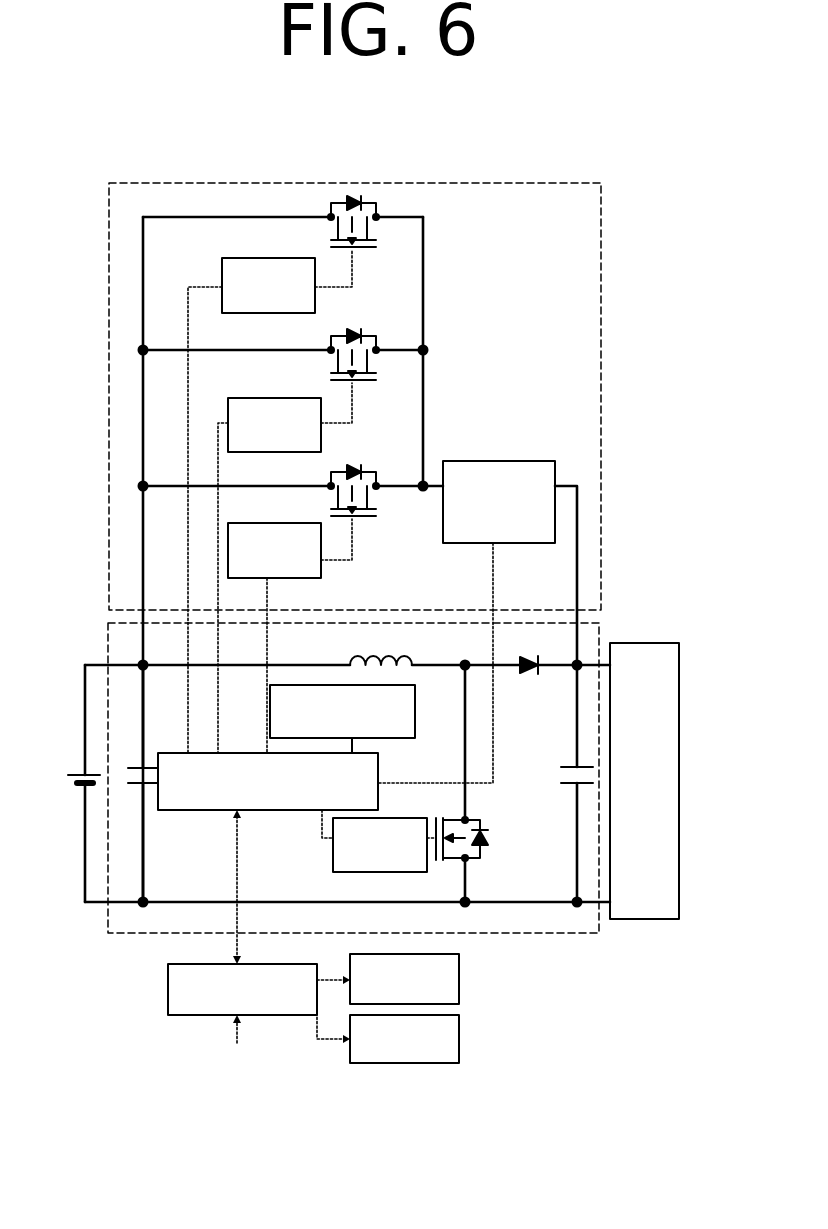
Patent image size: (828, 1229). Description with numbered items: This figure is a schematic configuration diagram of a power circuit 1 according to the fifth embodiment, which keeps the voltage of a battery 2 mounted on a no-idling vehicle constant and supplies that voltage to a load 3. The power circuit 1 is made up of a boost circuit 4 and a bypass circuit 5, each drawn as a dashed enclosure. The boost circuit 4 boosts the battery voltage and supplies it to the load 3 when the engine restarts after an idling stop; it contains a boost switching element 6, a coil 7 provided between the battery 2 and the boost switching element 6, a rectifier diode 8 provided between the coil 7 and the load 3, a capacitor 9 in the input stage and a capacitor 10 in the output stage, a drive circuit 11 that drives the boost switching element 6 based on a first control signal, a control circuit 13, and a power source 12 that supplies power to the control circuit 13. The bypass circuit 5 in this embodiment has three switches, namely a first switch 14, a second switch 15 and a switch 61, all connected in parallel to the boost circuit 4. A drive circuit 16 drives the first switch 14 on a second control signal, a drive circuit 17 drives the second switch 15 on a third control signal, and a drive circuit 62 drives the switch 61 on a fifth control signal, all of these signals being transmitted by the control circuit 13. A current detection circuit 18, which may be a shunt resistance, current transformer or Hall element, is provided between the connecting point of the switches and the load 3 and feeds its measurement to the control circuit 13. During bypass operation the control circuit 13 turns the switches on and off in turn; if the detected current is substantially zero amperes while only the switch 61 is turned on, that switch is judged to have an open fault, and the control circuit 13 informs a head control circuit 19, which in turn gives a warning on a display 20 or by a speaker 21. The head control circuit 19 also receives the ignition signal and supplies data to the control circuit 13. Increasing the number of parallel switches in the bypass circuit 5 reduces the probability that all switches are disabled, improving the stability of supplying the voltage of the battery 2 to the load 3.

The power circuit 1 is at (367, 169).
The battery 2 is at (79, 775).
The load 3 is at (647, 643).
The boost circuit 4 is at (552, 935).
The bypass circuit 5 is at (602, 399).
The boost switching element 6 is at (455, 855).
The coil 7 is at (412, 655).
The rectifier diode 8 is at (529, 657).
The capacitor 9 is at (139, 767).
The capacitor 10 is at (569, 767).
The drive circuit 11 is at (363, 854).
The power source 12 is at (416, 719).
The control circuit 13 is at (380, 771).
The first switch 14 is at (378, 365).
The second switch 15 is at (378, 500).
The drive circuit 16 is at (321, 439).
The drive circuit 17 is at (321, 574).
The current detection circuit 18 is at (494, 460).
The head control circuit 19 is at (168, 985).
The display 20 is at (460, 981).
The speaker 21 is at (460, 1038).
The switch 61 is at (378, 232).
The drive circuit 62 is at (316, 296).